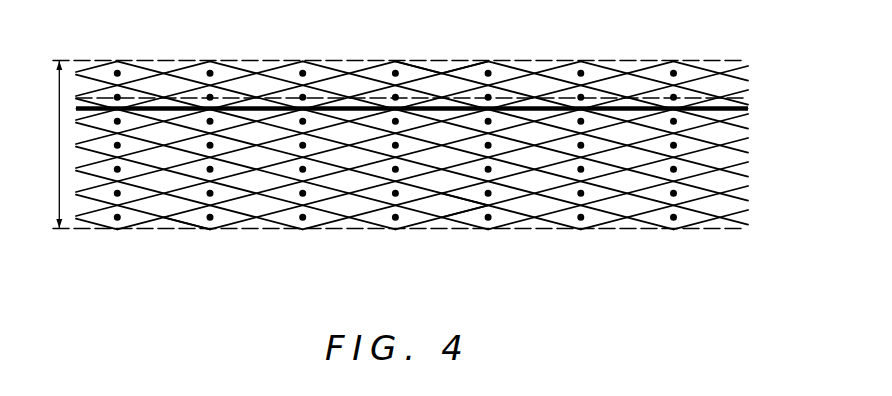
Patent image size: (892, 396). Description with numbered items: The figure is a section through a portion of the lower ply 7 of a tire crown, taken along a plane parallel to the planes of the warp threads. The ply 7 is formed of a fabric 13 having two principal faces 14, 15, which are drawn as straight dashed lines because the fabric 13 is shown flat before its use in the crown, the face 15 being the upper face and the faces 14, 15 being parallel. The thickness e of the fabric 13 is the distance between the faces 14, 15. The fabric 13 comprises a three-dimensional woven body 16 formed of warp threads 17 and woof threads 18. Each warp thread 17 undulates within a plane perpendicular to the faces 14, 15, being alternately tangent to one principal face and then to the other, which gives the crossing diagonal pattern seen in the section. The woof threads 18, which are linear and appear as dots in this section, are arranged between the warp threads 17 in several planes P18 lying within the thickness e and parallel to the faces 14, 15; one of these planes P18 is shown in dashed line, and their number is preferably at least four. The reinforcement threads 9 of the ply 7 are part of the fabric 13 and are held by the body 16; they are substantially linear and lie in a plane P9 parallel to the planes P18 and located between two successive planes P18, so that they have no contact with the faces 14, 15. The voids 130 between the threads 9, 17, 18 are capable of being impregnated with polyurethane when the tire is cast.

The lower ply 7 is at (152, 70).
The fabric 13 is at (527, 70).
The three-dimensional body 16 is at (460, 63).
The woof threads 18 is at (583, 220).
The voids 130 is at (458, 203).
The upper principal face 15 is at (625, 61).
The lower principal face 14 is at (543, 230).
The reinforcement threads 9 is at (748, 108).
The plane of the reinforcement threads P9 is at (748, 109).
The planes of the woof threads P18 is at (223, 98).
The warp threads 17 is at (178, 223).
The thickness of the fabric e is at (47, 144).